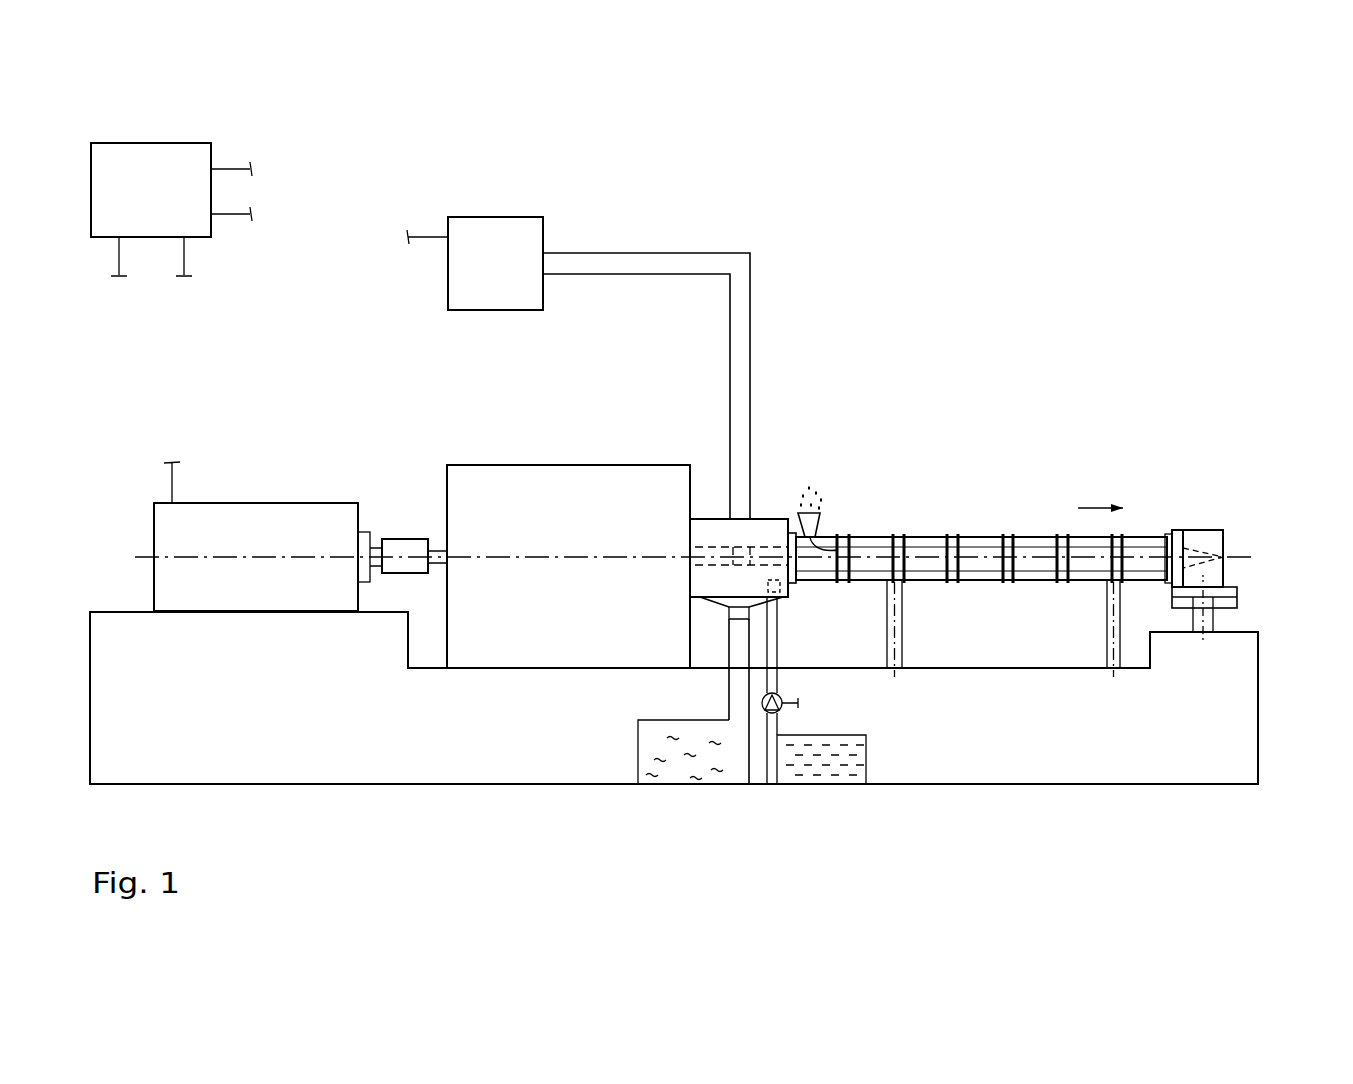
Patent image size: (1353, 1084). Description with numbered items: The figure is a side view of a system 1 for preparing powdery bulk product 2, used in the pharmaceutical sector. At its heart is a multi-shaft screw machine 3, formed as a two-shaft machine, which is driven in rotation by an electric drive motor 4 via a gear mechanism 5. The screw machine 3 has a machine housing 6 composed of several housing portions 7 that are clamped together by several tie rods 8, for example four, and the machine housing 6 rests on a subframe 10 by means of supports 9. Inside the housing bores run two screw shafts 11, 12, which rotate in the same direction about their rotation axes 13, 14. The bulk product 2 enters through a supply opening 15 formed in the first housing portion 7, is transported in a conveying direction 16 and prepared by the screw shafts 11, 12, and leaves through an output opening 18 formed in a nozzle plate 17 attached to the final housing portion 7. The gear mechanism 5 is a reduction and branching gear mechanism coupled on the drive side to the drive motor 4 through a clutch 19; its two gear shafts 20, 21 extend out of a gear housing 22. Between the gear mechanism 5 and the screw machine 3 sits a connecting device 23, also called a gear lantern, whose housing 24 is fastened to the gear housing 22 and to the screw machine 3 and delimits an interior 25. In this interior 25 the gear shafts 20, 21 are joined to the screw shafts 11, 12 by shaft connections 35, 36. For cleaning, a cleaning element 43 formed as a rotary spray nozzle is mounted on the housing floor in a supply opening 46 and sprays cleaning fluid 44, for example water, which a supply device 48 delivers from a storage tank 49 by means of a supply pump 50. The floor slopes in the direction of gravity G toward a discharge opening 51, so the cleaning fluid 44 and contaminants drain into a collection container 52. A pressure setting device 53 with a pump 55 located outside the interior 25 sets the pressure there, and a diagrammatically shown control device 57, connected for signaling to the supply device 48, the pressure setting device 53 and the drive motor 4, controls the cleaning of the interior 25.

The system 1 is at (761, 205).
The bulk product 2 is at (812, 495).
The multi-shaft screw machine 3 is at (826, 538).
The electric drive motor 4 is at (247, 507).
The gear mechanism 5 is at (567, 462).
The machine housing 6 is at (1158, 528).
The housing portions 7 is at (1078, 548).
The tie rods 8 is at (1147, 533).
The supports 9 is at (903, 650).
The subframe 10 is at (1014, 772).
The screw shaft 11 is at (792, 598).
The screw shaft 12 is at (792, 598).
The rotation axis 13 is at (967, 557).
The rotation axis 14 is at (967, 557).
The supply opening 15 is at (858, 537).
The conveying direction 16 is at (1100, 508).
The nozzle plate 17 is at (1201, 536).
The output opening 18 is at (1223, 557).
The clutch 19 is at (398, 538).
The gear shaft 20 is at (705, 576).
The gear shaft 21 is at (705, 576).
The gear housing 22 is at (497, 470).
The connecting device 23 is at (712, 515).
The housing 24 is at (692, 596).
The interior 25 is at (739, 557).
The shaft connection 35 is at (748, 544).
The shaft connection 36 is at (748, 544).
The cleaning element 43 is at (772, 555).
The cleaning fluid 44 is at (790, 763).
The supply opening 46 is at (782, 598).
The supply device 48 is at (762, 717).
The storage tank 49 is at (866, 760).
The supply pump 50 is at (767, 735).
The discharge opening 51 is at (740, 613).
The collection container 52 is at (638, 754).
The pressure setting device 53 is at (622, 252).
The pump 55 is at (496, 215).
The control device 57 is at (150, 152).
The direction of gravity G is at (1098, 257).